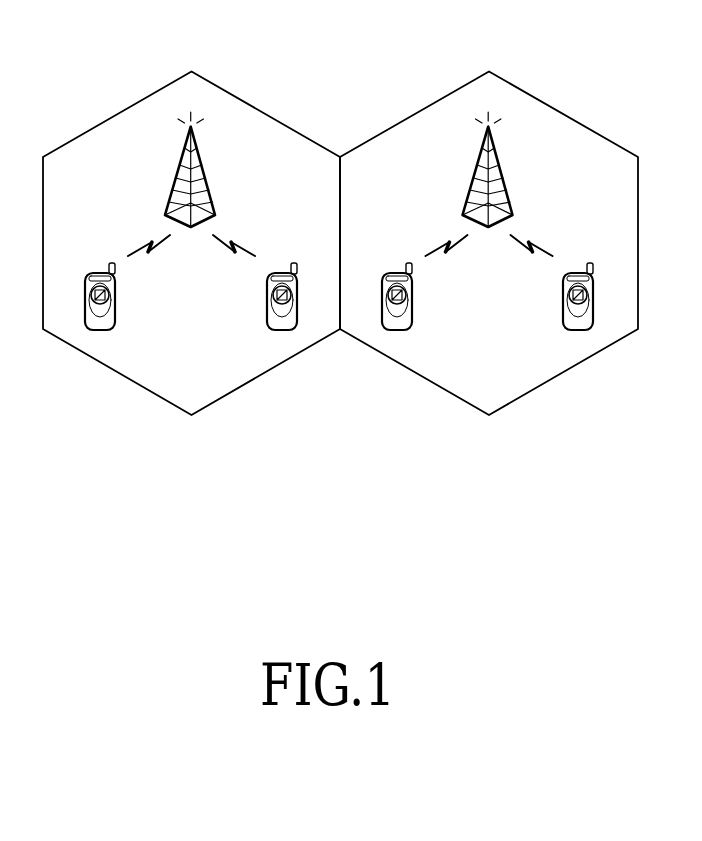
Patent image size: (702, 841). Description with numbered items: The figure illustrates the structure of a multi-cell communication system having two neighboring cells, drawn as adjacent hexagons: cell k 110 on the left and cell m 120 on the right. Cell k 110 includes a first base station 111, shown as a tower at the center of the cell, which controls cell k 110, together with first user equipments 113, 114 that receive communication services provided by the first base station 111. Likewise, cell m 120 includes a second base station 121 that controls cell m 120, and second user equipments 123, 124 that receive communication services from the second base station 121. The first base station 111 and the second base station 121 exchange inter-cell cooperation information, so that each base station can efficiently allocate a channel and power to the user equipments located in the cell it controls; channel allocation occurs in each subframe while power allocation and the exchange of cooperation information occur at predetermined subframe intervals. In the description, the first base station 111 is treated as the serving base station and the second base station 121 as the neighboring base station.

The cell k 110 is at (190, 72).
The first base station 111 is at (204, 174).
The first user equipment 113 is at (287, 273).
The first user equipment 114 is at (105, 273).
The cell m 120 is at (488, 72).
The second base station 121 is at (502, 174).
The second user equipment 123 is at (402, 273).
The second user equipment 124 is at (585, 273).